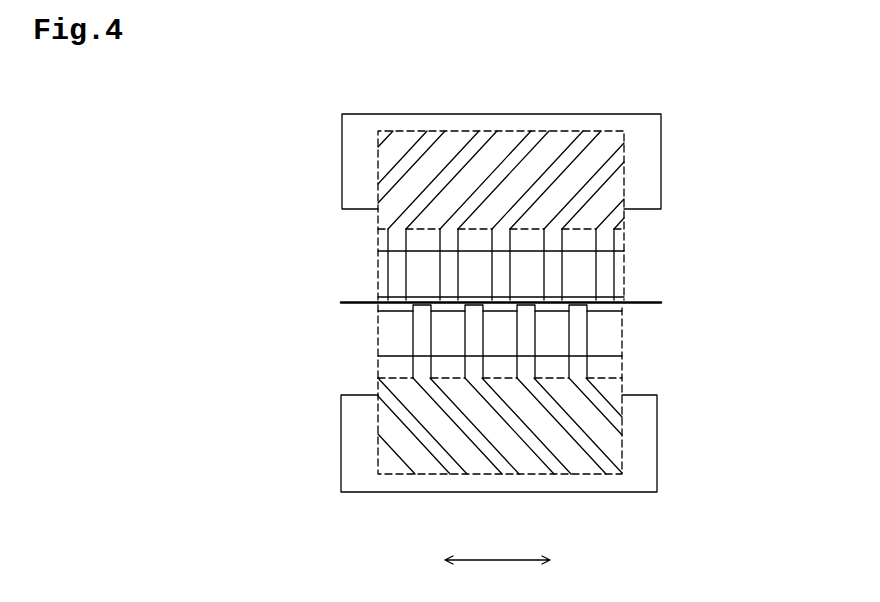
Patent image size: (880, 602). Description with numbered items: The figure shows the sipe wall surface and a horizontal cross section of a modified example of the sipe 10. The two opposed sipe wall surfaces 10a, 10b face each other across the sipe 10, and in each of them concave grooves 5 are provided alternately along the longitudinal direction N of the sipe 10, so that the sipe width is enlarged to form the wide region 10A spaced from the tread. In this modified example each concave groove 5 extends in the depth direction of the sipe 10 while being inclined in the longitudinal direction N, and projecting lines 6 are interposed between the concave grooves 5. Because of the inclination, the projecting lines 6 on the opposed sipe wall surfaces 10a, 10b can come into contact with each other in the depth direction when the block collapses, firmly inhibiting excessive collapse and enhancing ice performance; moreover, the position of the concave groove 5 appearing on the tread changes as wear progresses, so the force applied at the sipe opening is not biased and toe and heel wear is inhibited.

The sipe wall surface 10a is at (427, 123).
The sipe wall surface 10b is at (428, 483).
The wide region 10A is at (590, 130).
The concave groove 5 is at (513, 131).
The projecting line 6 is at (538, 137).
The sipe 10 is at (357, 306).
The longitudinal direction N is at (497, 574).